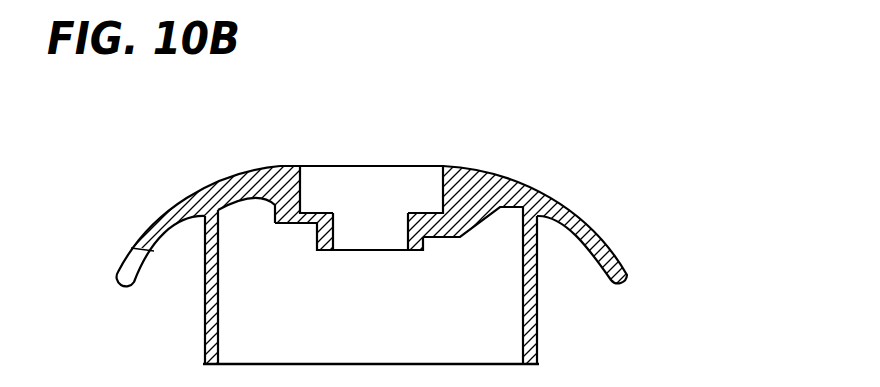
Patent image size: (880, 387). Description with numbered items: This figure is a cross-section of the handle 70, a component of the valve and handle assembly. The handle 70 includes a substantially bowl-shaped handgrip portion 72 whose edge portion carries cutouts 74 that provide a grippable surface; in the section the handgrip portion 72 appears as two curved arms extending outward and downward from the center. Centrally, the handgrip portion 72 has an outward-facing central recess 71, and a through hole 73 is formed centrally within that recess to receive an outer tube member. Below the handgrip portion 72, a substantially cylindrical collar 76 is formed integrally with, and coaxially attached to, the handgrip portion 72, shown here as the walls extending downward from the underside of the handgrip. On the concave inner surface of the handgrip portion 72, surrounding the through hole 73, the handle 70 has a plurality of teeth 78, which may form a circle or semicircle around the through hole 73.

The handle 70 is at (668, 221).
The central recess 71 is at (303, 182).
The handgrip portion 72 is at (543, 192).
The through hole 73 is at (333, 233).
The cutouts 74 is at (150, 233).
The collar 76 is at (538, 327).
The teeth 78 is at (485, 211).